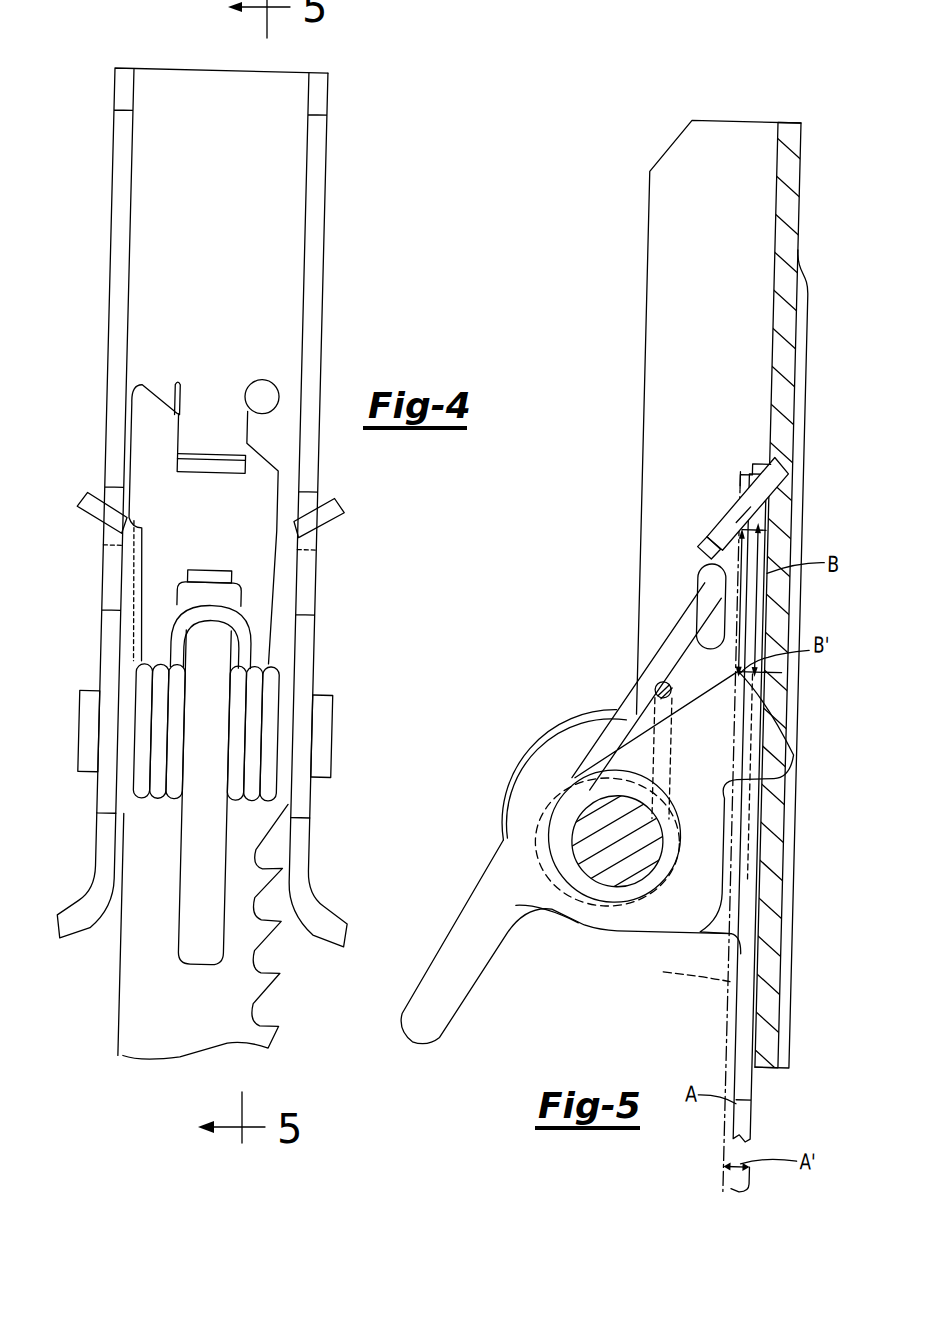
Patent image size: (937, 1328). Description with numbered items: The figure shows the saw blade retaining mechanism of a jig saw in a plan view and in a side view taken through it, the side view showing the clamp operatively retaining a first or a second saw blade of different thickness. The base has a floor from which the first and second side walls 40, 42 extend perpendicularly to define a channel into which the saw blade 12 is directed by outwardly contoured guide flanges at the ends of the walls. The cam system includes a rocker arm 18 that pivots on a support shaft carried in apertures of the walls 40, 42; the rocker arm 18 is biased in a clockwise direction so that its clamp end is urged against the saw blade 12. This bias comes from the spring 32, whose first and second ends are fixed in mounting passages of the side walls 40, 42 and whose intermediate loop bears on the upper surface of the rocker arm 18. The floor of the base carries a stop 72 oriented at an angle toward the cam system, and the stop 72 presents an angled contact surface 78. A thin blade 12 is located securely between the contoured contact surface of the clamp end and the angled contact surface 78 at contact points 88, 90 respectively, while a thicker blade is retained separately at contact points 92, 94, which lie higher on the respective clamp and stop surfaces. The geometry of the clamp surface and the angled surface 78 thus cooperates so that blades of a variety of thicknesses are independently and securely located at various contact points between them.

In FIG. 4, the saw blade 12 is at (158, 1012).
In FIG. 5, the saw blade 12 is at (776, 1086).
In FIG. 4, the rocker arm 18 is at (222, 785).
In FIG. 4, the spring 32 is at (277, 660).
In FIG. 4, the first side wall 40 is at (123, 201).
In FIG. 4, the second side wall 42 is at (325, 190).
In FIG. 4, the stop 72 is at (217, 405).
In FIG. 5, the stop 72 is at (738, 531).
In FIG. 5, the angled contact surface 78 is at (734, 560).
In FIG. 5, the contact point 88 is at (759, 684).
In FIG. 5, the contact point 90 is at (760, 518).
In FIG. 5, the contact point 92 is at (750, 674).
In FIG. 5, the contact point 94 is at (722, 528).